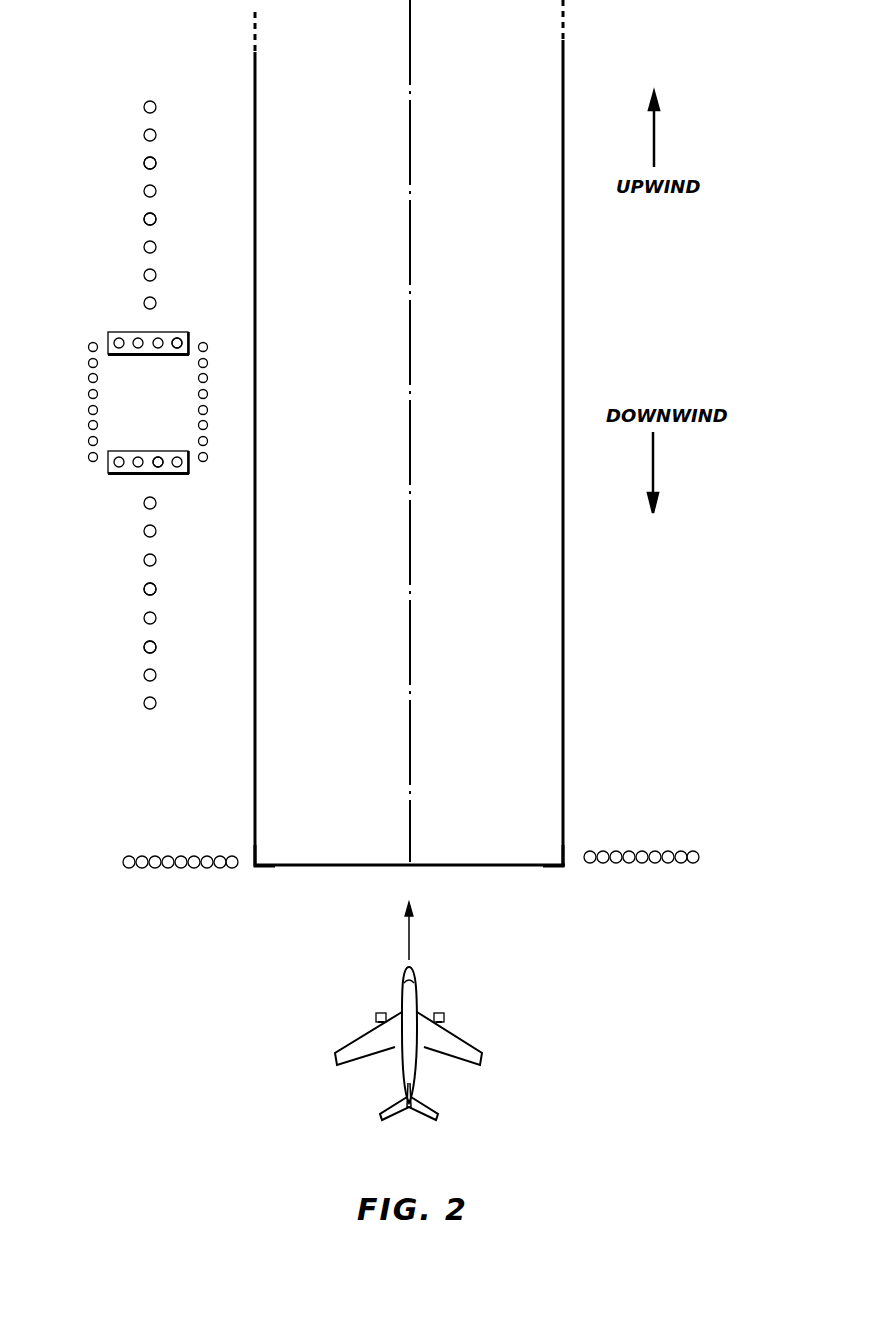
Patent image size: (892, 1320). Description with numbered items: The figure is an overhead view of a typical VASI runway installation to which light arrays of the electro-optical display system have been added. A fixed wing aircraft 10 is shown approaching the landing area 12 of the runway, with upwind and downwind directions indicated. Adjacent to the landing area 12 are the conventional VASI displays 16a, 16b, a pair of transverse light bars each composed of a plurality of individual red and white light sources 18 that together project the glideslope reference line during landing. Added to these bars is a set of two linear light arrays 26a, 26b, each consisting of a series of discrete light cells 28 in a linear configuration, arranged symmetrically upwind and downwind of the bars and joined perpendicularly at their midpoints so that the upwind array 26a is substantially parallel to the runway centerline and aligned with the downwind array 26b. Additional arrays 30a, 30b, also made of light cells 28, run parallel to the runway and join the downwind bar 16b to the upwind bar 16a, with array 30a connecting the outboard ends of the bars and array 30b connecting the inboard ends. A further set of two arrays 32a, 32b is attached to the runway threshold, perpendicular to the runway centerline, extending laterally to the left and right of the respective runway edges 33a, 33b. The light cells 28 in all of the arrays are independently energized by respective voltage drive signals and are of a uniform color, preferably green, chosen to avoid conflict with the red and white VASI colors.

The fixed wing aircraft 10 is at (378, 1040).
The landing area 12 is at (411, 520).
The VASI display 16a is at (110, 332).
The VASI display 16b is at (114, 475).
The light sources 18 is at (177, 338).
The linear light array 26a is at (138, 140).
The linear light array 26b is at (142, 660).
The discrete light cells 28 is at (153, 163).
The additional array 30a is at (89, 407).
The additional array 30b is at (207, 407).
The additional array 32a is at (170, 853).
The additional array 32b is at (672, 852).
The runway edge 33a is at (256, 857).
The runway edge 33b is at (566, 857).